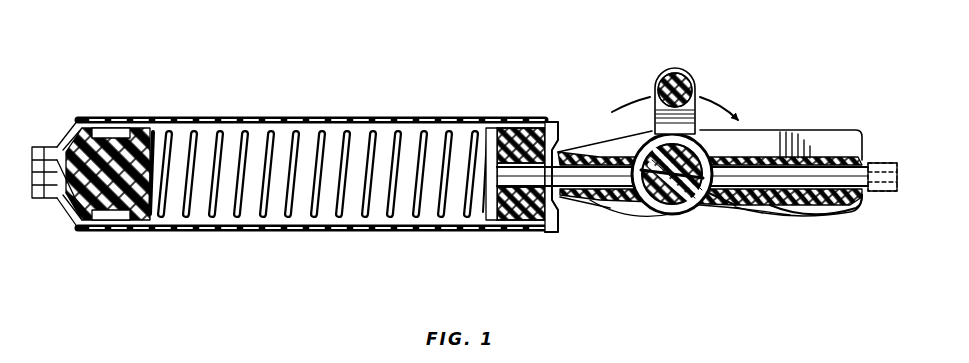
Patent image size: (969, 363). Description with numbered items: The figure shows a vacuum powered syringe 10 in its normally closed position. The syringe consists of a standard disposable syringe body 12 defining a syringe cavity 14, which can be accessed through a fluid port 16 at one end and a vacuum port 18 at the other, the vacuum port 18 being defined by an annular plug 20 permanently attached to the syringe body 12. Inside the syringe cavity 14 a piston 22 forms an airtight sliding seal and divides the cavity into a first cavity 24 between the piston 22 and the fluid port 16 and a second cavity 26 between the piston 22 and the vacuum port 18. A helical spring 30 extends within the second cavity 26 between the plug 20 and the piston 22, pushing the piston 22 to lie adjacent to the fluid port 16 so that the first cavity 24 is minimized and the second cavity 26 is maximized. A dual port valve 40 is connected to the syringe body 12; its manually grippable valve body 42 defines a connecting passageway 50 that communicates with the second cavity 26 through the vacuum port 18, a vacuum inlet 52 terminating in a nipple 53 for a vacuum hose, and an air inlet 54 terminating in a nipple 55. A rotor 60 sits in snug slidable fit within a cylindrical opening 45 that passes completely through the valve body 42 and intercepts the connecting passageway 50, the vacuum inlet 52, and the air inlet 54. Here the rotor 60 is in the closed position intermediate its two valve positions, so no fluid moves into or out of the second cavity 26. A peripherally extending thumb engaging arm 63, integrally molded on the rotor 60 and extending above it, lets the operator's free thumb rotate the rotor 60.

The vacuum powered syringe 10 is at (368, 88).
The syringe body 12 is at (237, 126).
The syringe cavity 14 is at (380, 162).
The fluid port 16 is at (43, 140).
The vacuum port 18 is at (497, 175).
The annular plug 20 is at (557, 218).
The piston 22 is at (118, 190).
The first cavity 24 is at (72, 210).
The second cavity 26 is at (268, 211).
The spring 30 is at (376, 200).
The dual port valve 40 is at (737, 85).
The valve body 42 is at (724, 208).
The cylindrical opening 45 is at (706, 206).
The connecting passageway 50 is at (580, 176).
The vacuum inlet 52 is at (757, 146).
The nipple 53 is at (862, 207).
The air inlet 54 is at (872, 163).
The nipple 55 is at (889, 194).
The rotor 60 is at (661, 204).
The thumb engaging arm 63 is at (683, 72).